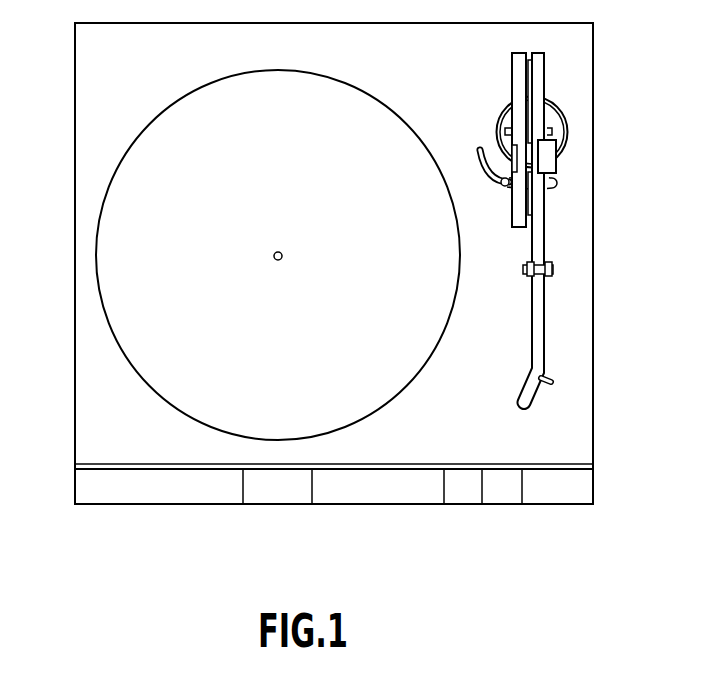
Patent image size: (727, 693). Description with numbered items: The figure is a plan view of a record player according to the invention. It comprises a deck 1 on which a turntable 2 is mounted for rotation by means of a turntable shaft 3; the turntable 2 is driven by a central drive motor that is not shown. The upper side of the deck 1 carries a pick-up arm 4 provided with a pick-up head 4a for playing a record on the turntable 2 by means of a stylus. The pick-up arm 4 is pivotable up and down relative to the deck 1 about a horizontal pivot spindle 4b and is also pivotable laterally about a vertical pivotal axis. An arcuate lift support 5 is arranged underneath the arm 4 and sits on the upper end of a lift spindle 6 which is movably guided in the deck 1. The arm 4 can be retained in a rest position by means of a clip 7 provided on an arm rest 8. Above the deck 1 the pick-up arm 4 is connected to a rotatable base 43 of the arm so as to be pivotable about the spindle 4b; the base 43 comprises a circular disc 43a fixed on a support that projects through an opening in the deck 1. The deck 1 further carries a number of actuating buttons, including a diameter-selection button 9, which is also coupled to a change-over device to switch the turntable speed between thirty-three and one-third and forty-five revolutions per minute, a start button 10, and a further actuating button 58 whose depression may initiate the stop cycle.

The deck 1 is at (75, 108).
The turntable 2 is at (120, 222).
The turntable shaft 3 is at (281, 260).
The pick-up arm 4 is at (540, 302).
The pick-up head 4a is at (522, 403).
The horizontal pivot spindle 4b is at (505, 131).
The arcuate lift support 5 is at (483, 161).
The lift spindle 6 is at (503, 190).
The clip 7 is at (553, 268).
The arm rest 8 is at (553, 262).
The diameter-selection button 9 is at (283, 490).
The start button 10 is at (563, 493).
The rotatable base 43 is at (574, 120).
The circular disc 43a is at (560, 138).
The further actuating button 58 is at (465, 490).